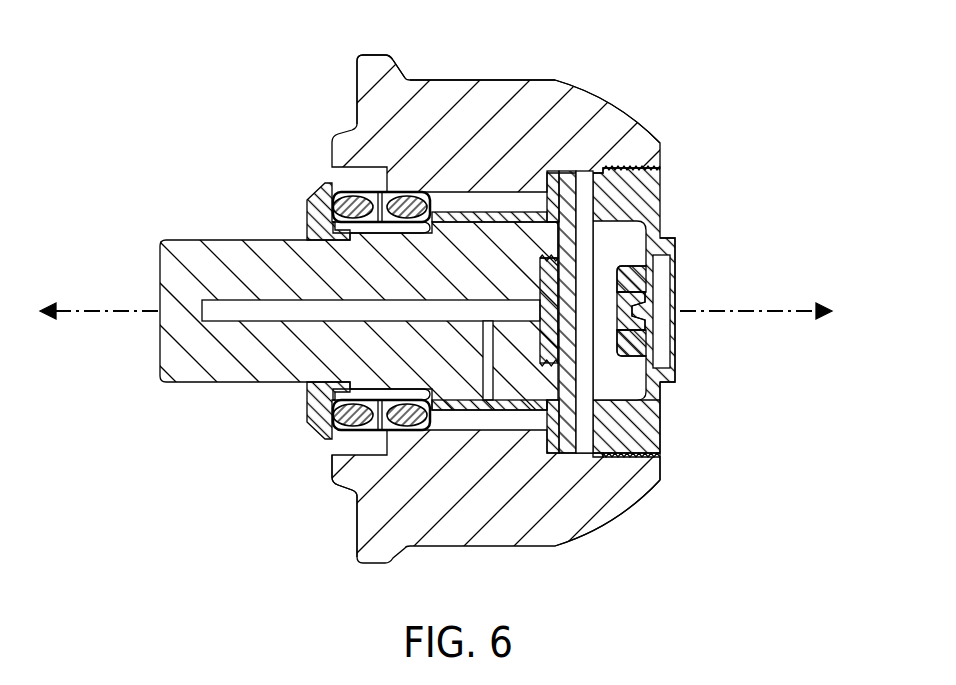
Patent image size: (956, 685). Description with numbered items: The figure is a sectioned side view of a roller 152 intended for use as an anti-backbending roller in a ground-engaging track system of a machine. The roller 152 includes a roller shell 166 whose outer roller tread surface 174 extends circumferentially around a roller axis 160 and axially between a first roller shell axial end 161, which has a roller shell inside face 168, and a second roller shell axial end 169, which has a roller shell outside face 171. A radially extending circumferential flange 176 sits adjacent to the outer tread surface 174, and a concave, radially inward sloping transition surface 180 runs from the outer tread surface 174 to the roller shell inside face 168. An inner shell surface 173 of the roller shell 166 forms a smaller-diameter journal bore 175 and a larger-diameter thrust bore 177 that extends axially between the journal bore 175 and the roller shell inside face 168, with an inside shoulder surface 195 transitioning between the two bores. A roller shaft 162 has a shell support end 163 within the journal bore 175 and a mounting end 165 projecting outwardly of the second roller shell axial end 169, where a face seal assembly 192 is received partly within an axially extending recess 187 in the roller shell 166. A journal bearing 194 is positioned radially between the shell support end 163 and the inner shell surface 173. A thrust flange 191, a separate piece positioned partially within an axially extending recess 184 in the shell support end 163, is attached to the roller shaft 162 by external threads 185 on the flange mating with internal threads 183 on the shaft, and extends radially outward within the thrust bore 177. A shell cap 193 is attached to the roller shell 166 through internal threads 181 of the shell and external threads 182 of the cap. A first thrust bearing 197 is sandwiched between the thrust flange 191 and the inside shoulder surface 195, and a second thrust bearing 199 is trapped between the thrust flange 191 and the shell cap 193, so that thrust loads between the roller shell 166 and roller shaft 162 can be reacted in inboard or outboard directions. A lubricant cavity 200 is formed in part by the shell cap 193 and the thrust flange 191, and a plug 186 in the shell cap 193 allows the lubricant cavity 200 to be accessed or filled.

The roller 152 is at (700, 100).
The roller axis 160 is at (805, 310).
The first roller shell axial end 161 is at (668, 488).
The roller shaft 162 is at (305, 240).
The shell support end 163 is at (560, 205).
The mounting end 165 is at (195, 384).
The roller shell 166 is at (575, 530).
The roller shell inside face 168 is at (662, 462).
The second roller shell axial end 169 is at (312, 484).
The roller shell outside face 171 is at (320, 448).
The inner shell surface 173 is at (445, 215).
The outer roller tread surface 174 is at (490, 80).
The journal bore 175 is at (473, 402).
The radially extending circumferential flange 176 is at (377, 58).
The thrust bore 177 is at (605, 428).
The transition surface 180 is at (580, 92).
The internal threads 181 is at (660, 440).
The external threads 182 is at (612, 460).
The internal threads 183 is at (578, 268).
The axially extending recess 184 is at (540, 356).
The external threads 185 is at (590, 230).
The plug 186 is at (663, 312).
The axially extending recess 187 is at (383, 402).
The thrust flange 191 is at (563, 173).
The face seal assembly 192 is at (400, 180).
The shell cap 193 is at (662, 178).
The journal bearing 194 is at (438, 412).
The inside shoulder surface 195 is at (552, 262).
The thrust bearing 197 is at (555, 452).
The thrust bearing 199 is at (590, 178).
The lubricant cavity 200 is at (652, 362).